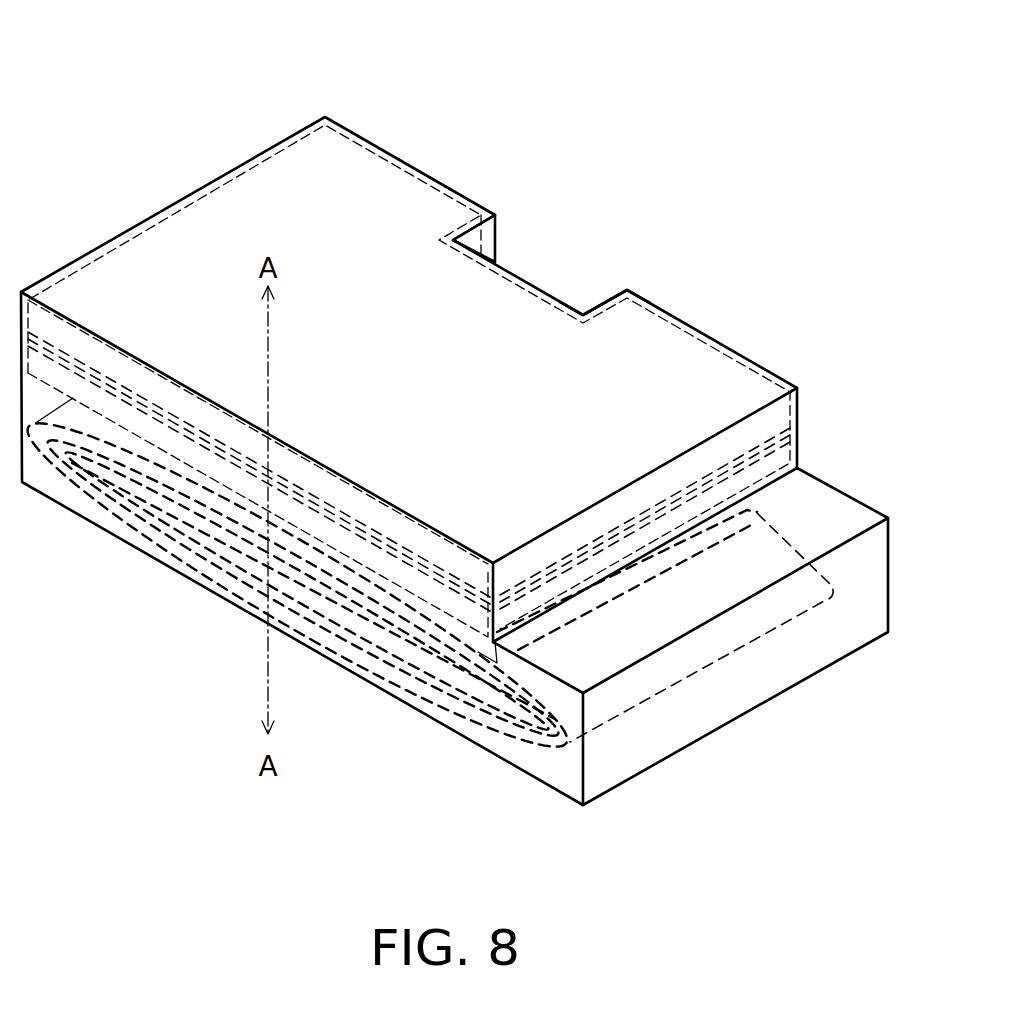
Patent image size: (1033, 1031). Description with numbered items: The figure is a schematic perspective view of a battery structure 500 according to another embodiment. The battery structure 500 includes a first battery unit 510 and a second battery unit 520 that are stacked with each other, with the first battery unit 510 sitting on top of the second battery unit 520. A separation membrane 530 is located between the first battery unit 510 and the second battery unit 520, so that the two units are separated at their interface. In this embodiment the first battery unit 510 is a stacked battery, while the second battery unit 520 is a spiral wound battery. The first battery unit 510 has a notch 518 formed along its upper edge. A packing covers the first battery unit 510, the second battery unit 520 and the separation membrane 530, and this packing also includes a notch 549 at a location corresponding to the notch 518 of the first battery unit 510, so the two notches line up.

The battery structure 500 is at (142, 97).
The first battery unit 510 is at (668, 397).
The notch 518 is at (562, 304).
The notch 549 is at (540, 283).
The second battery unit 520 is at (775, 540).
The separation membrane 530 is at (773, 488).